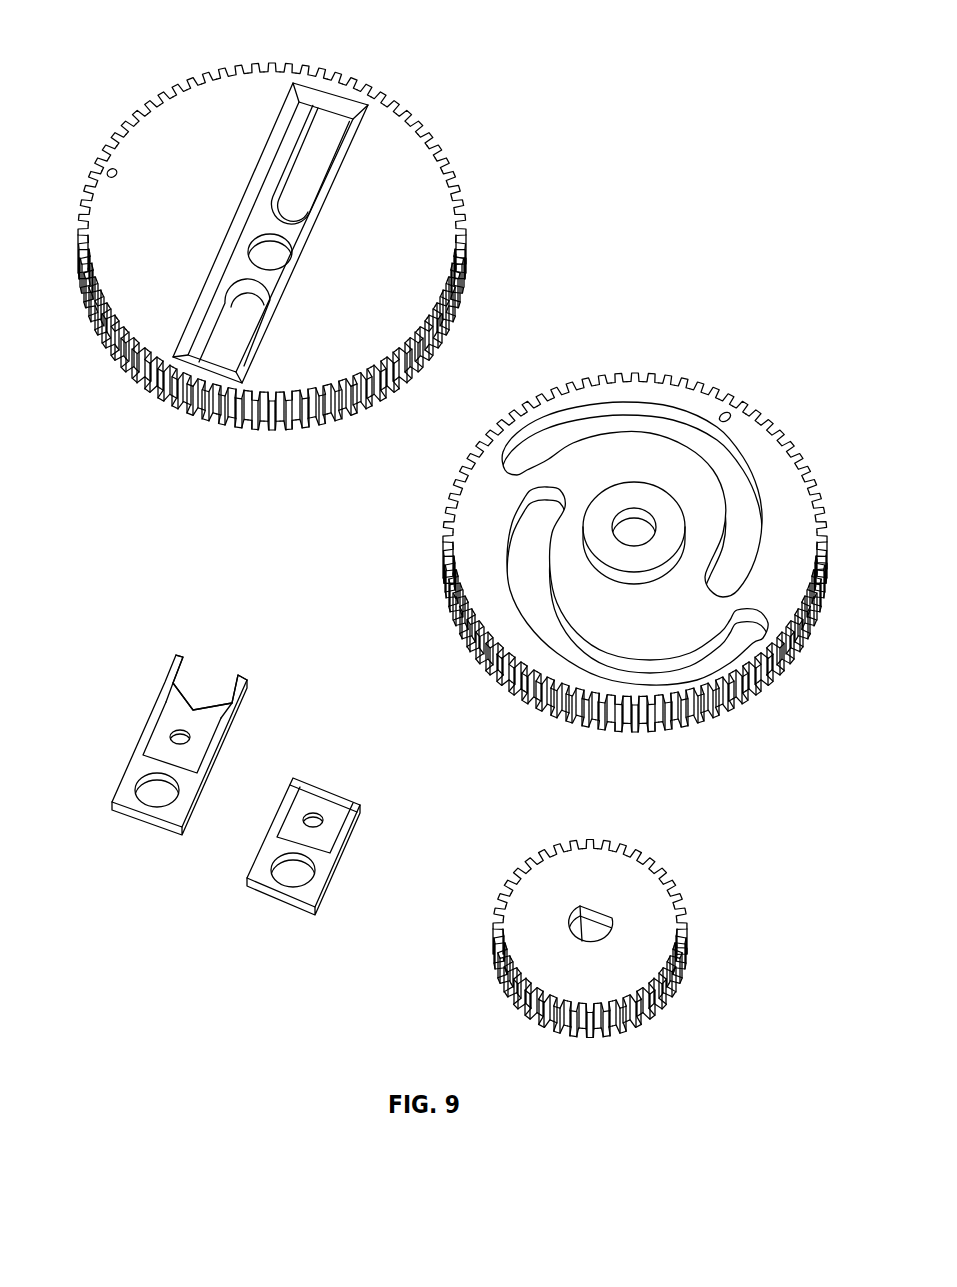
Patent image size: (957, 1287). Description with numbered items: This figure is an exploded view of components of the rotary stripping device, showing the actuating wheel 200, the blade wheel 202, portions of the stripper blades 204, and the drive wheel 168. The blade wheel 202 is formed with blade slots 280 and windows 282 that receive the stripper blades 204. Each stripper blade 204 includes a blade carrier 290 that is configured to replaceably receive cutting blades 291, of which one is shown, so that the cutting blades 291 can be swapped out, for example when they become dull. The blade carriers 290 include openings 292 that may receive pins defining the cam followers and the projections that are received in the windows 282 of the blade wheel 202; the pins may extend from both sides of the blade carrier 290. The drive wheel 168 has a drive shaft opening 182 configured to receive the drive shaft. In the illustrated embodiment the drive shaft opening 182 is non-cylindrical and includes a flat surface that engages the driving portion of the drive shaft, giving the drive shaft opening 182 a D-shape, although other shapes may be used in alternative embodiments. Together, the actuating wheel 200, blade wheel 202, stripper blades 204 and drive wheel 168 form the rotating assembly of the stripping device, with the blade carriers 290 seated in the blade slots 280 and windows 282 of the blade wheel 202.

The blade wheel 202 is at (271, 237).
The blade slots 280 is at (270, 198).
The windows 282 is at (326, 133).
The actuating wheel 200 is at (757, 443).
The drive wheel 168 is at (631, 939).
The drive shaft opening 182 is at (605, 906).
The stripper blades 204 is at (211, 793).
The blade carrier 290 is at (154, 771).
The cutting blades 291 is at (172, 692).
The openings 292 is at (159, 806).